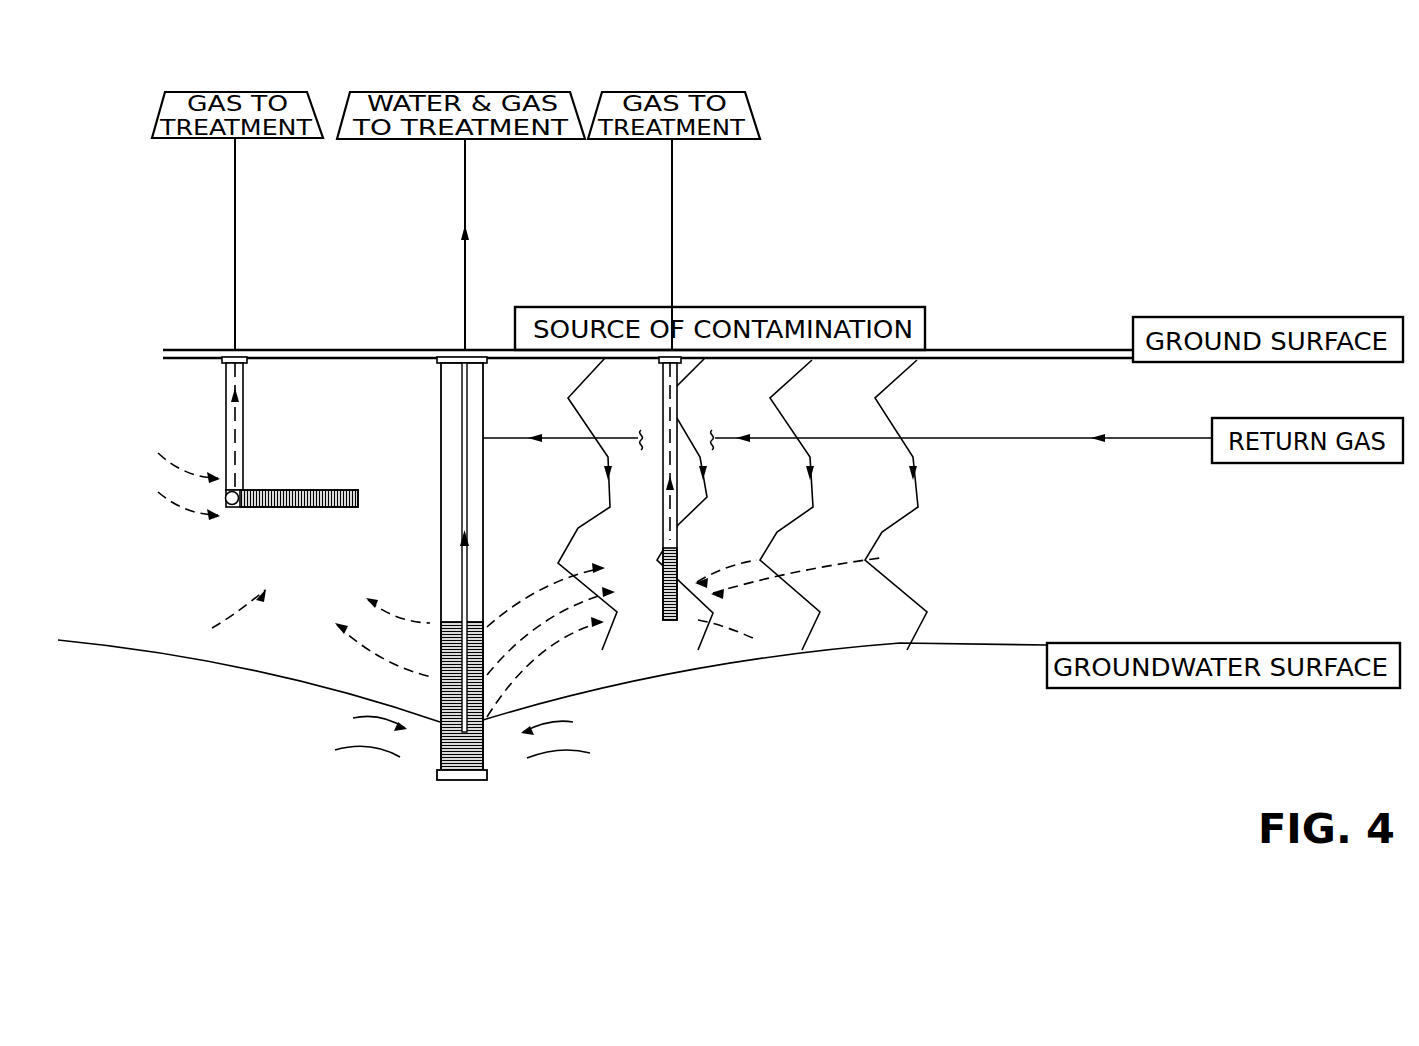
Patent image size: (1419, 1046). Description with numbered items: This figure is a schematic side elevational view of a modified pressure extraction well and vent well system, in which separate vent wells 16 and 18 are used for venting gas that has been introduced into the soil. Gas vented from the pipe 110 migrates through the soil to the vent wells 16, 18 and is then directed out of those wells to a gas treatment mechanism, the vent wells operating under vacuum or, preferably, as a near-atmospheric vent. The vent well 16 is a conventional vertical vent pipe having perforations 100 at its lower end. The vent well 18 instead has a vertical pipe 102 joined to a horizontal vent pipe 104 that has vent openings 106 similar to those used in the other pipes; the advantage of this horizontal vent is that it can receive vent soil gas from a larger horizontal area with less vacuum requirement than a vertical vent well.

The vent well 16 is at (709, 488).
The vent well 18 is at (254, 432).
The perforations 100 is at (665, 560).
The vertical pipe 102 is at (243, 430).
The horizontal vent pipe 104 is at (306, 463).
The vent openings 106 is at (305, 490).
The pipe 110 is at (483, 510).